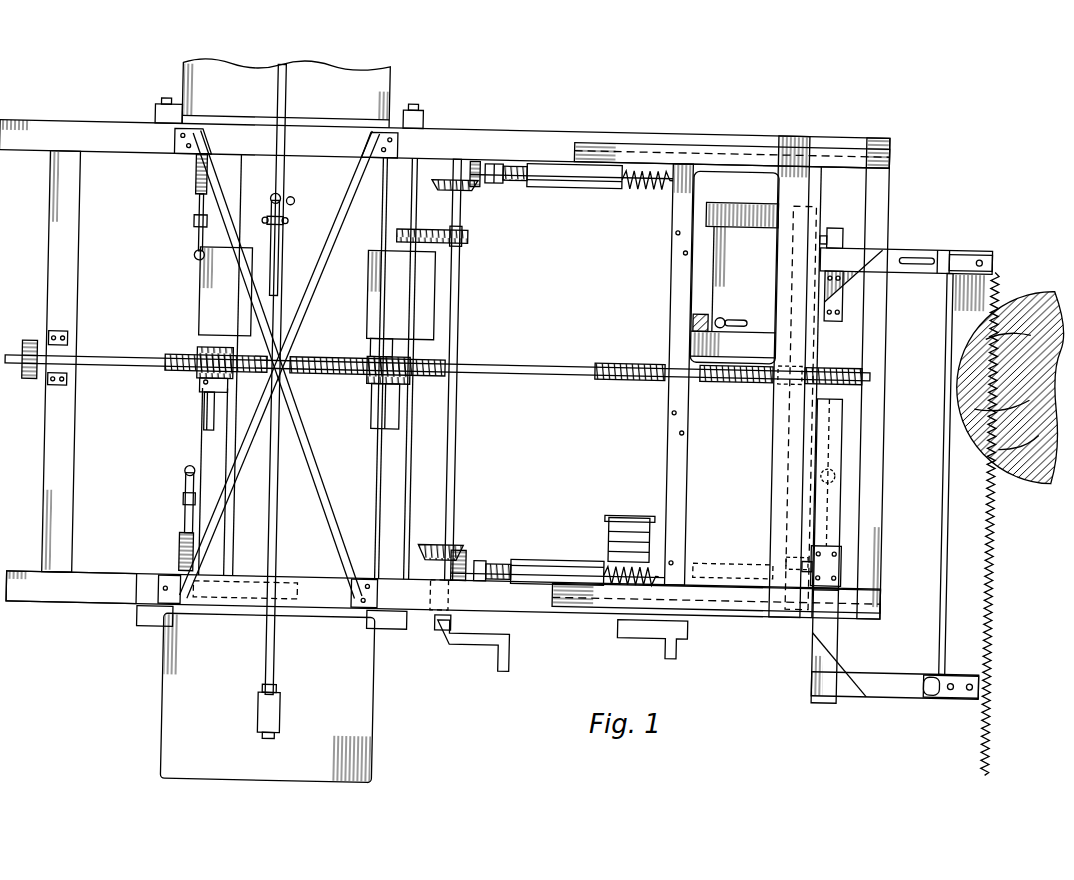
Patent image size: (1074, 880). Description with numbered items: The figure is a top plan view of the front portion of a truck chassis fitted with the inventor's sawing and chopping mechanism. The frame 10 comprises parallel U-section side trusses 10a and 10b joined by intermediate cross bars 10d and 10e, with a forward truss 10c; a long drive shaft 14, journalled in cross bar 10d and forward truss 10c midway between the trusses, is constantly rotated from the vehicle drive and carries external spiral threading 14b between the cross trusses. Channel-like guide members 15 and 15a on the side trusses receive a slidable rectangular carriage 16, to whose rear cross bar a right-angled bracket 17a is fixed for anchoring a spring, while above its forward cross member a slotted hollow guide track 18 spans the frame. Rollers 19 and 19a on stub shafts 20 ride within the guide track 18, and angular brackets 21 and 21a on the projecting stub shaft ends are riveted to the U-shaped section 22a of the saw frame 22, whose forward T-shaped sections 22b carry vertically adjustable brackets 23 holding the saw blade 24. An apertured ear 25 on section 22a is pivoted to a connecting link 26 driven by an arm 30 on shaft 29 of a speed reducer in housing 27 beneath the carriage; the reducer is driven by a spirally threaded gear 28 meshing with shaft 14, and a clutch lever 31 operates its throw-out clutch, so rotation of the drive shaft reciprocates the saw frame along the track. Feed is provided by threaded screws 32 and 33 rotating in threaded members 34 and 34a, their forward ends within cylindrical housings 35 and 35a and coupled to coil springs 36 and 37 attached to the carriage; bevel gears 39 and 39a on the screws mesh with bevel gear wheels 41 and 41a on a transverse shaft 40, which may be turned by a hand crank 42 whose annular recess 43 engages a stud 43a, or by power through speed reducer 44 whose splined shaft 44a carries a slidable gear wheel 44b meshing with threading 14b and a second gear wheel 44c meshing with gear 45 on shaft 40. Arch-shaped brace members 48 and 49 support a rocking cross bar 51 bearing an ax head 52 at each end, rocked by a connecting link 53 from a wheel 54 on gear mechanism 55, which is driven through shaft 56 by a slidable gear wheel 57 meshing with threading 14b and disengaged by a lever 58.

The frame 10 is at (96, 612).
The side truss 10a is at (488, 131).
The side truss 10b is at (548, 612).
The forward truss 10c is at (888, 192).
The cross bar 10d is at (78, 214).
The cross bar 10e is at (379, 478).
The shaft 14 is at (514, 376).
The external spiral threading 14b is at (300, 380).
The guide member 15 is at (622, 142).
The guide member 15a is at (728, 612).
The carriage 16 is at (668, 434).
The right-angled bracket 17a is at (700, 560).
The guide track 18 is at (790, 132).
The rollers 19 is at (788, 380).
The rollers 19a is at (790, 556).
The stub shaft 20 is at (791, 552).
The angular bracket 21 is at (845, 392).
The angular bracket 21a is at (845, 556).
The saw frame 22 is at (820, 640).
The U-shaped section 22a is at (893, 690).
The T-shaped section 22b is at (940, 667).
The bracket 23 is at (975, 250).
The saw blade 24 is at (949, 525).
The apertured ear 25 is at (840, 470).
The connecting link 26 is at (845, 300).
The housing 27 is at (720, 262).
The spirally threaded gear 28 is at (694, 312).
The shaft 29 is at (830, 222).
The arm 30 is at (860, 258).
The clutch lever 31 is at (726, 311).
The externally threaded screw 32 is at (510, 167).
The externally threaded screw 33 is at (508, 565).
The threaded member 34 is at (495, 186).
The threaded member 34a is at (486, 560).
The cylindrical housing 35 is at (582, 187).
The cylindrical housing 35a is at (576, 572).
The compressible coil spring 36 is at (648, 188).
The compressible coil spring 37 is at (660, 540).
The bevelled gear 39 is at (472, 190).
The bevelled gear 39a is at (465, 552).
The transversely extending shaft 40 is at (457, 339).
The bevelled gear wheel 41 is at (459, 236).
The bevelled gear wheel 41a is at (428, 545).
The hand crank 42 is at (478, 652).
The annular recess 43 is at (442, 632).
The stud 43a is at (455, 604).
The speed reducer 44 is at (366, 262).
The splined shaft 44a is at (370, 350).
The gear wheel 44b is at (372, 395).
The gear wheel 44c is at (445, 192).
The gear 45 is at (460, 245).
The brace member 48 is at (314, 483).
The brace member 49 is at (258, 472).
The cross bar 51 is at (280, 650).
The ax head 52 is at (289, 718).
The connecting link 53 is at (290, 232).
The wheel 54 is at (264, 239).
The gear mechanism 55 is at (200, 290).
The shaft 56 is at (212, 436).
The gear wheel 57 is at (198, 359).
The lever 58 is at (200, 393).